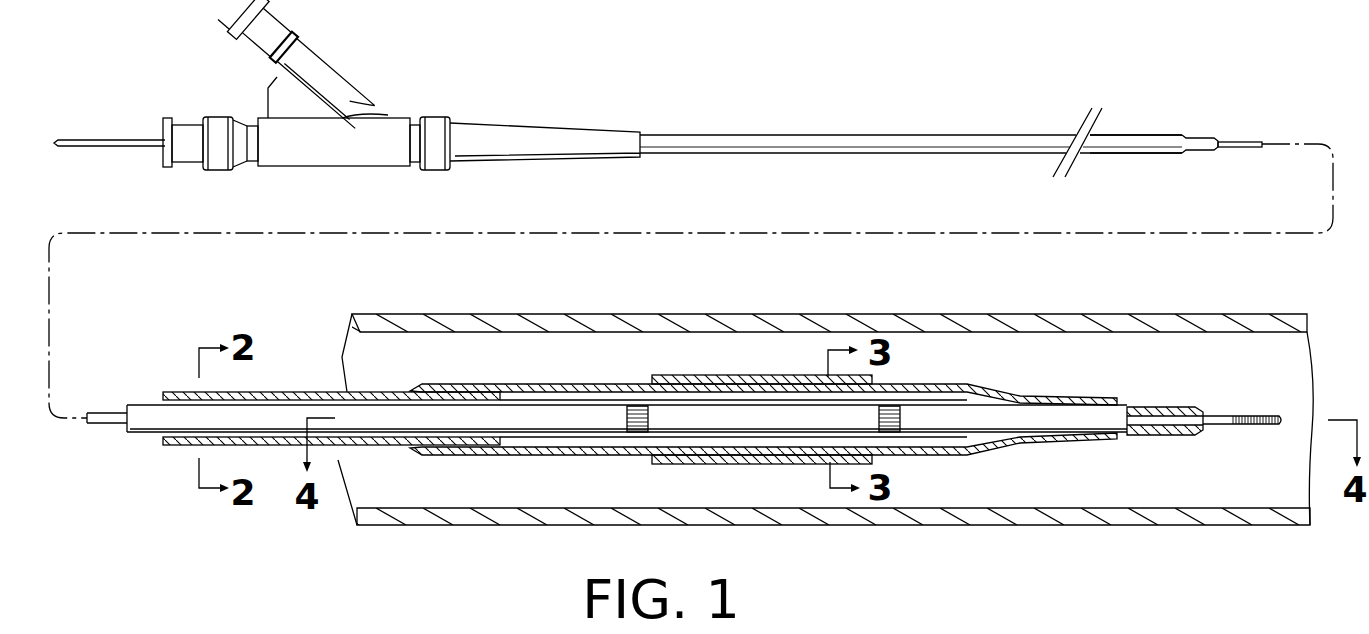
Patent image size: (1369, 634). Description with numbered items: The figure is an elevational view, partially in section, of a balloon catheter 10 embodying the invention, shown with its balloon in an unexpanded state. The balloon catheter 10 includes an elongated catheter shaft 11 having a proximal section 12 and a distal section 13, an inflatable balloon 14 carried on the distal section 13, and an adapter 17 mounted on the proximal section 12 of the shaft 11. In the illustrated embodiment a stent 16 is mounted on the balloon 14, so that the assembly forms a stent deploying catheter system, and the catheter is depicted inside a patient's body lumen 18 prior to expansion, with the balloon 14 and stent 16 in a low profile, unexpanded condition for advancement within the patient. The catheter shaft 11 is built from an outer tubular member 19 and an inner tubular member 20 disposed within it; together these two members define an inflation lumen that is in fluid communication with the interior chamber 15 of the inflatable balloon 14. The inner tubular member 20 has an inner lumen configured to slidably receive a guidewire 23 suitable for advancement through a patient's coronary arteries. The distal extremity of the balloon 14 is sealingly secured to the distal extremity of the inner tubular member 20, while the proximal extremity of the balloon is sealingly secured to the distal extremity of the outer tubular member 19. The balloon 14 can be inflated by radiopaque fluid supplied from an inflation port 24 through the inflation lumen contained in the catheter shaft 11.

The balloon catheter 10 is at (1012, 83).
The catheter shaft 11 is at (678, 134).
The proximal section 12 is at (912, 157).
The distal section 13 is at (160, 403).
The inflatable balloon 14 is at (925, 384).
The interior chamber 15 is at (925, 442).
The stent 16 is at (760, 375).
The adapter 17 is at (262, 116).
The body lumen 18 is at (1078, 338).
The outer tubular member 19 is at (1133, 145).
The inner tubular member 20 is at (1203, 140).
The guidewire 23 is at (1238, 149).
The inflation port 24 is at (316, 56).